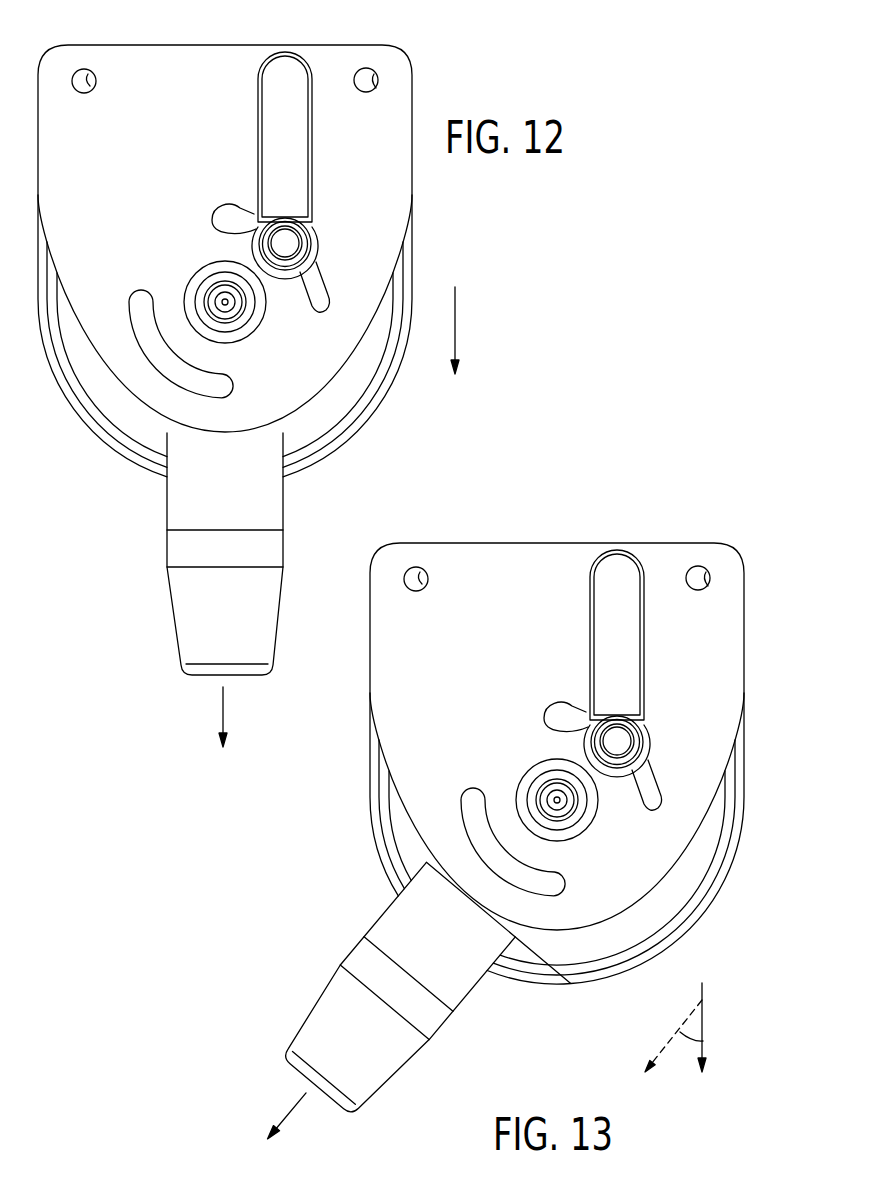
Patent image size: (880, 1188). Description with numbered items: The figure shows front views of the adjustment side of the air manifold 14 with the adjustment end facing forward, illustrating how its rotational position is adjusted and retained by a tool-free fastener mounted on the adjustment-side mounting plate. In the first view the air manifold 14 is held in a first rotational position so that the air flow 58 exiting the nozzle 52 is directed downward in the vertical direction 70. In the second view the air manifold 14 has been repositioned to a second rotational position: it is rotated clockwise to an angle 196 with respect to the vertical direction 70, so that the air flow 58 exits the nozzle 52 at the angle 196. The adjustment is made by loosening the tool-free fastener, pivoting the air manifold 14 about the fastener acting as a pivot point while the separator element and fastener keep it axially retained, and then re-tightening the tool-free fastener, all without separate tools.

In FIG. 12, the air manifold 14 is at (414, 49).
In FIG. 13, the air manifold 14 is at (557, 838).
In FIG. 12, the nozzle 52 is at (172, 618).
In FIG. 13, the nozzle 52 is at (395, 1073).
In FIG. 12, the air flow 58 is at (222, 716).
In FIG. 13, the air flow 58 is at (292, 1110).
In FIG. 12, the vertical direction 70 is at (457, 316).
In FIG. 13, the vertical direction 70 is at (703, 1023).
In FIG. 13, the angle 196 is at (682, 1037).